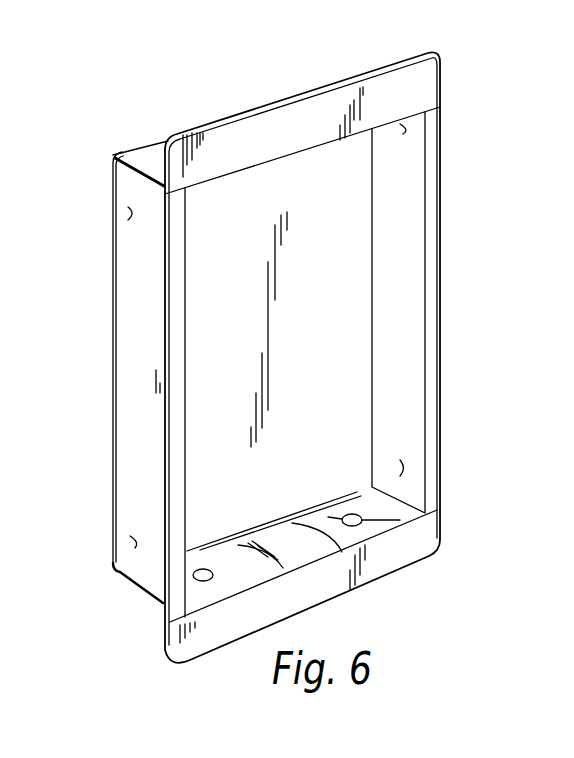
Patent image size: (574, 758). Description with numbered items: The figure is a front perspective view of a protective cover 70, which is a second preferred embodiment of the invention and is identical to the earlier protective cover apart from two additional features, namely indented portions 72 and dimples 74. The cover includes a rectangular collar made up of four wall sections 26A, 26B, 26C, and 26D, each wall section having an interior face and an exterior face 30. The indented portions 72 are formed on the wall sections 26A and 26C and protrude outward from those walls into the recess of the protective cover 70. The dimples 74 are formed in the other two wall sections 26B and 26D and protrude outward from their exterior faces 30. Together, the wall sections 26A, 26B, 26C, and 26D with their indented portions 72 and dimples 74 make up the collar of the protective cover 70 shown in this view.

The protective cover 70 is at (330, 78).
The wall section 26A is at (228, 584).
The wall section 26B is at (130, 300).
The wall section 26C is at (157, 167).
The wall section 26D is at (398, 232).
The exterior face 30 is at (130, 157).
The indented portion 72 is at (286, 167).
The dimple 74 is at (128, 213).